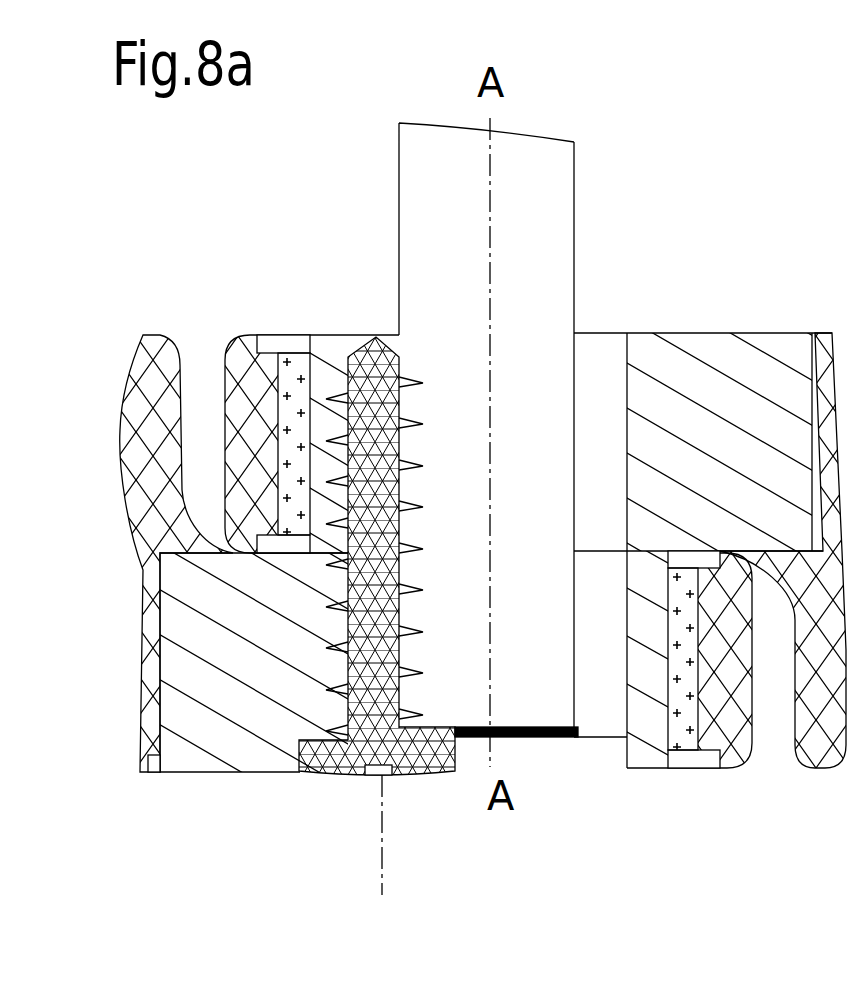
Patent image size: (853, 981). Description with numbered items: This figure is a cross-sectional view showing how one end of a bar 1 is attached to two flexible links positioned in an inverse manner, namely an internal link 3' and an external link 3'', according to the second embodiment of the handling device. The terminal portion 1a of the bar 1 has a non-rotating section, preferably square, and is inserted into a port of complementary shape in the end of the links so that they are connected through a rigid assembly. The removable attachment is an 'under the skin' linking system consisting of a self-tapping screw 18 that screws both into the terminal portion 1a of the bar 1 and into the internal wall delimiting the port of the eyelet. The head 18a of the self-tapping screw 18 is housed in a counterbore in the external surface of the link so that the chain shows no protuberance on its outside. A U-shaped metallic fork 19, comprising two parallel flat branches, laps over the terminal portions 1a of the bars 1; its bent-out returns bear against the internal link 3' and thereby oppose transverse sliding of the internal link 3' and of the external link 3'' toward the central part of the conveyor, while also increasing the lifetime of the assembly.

The bar 1 is at (548, 187).
The terminal portion of the bar 1a is at (552, 350).
The internal link 3' is at (783, 478).
The external link 3'' is at (176, 624).
The self-tapping screw 18 is at (353, 335).
The head of the tapping screw 18a is at (345, 775).
The U-shaped metallic fork 19 is at (543, 737).